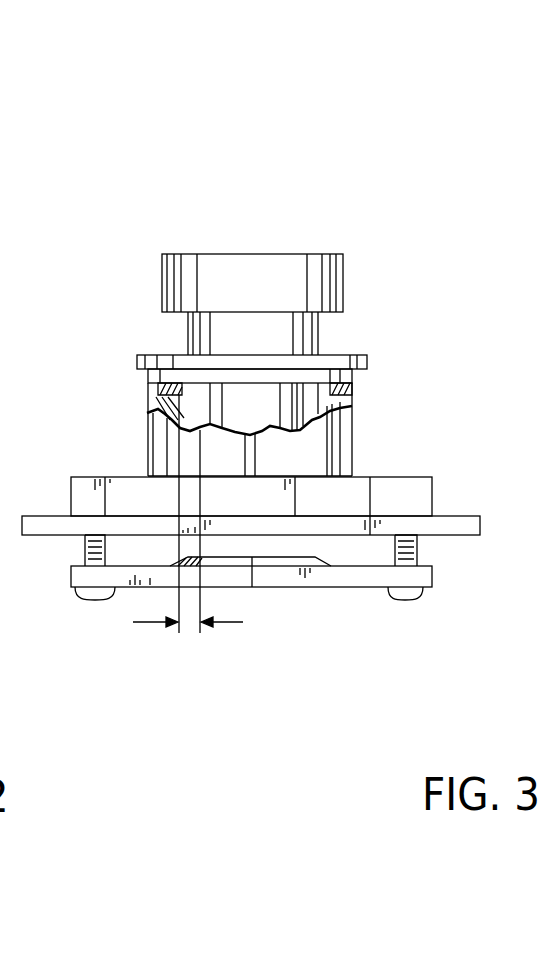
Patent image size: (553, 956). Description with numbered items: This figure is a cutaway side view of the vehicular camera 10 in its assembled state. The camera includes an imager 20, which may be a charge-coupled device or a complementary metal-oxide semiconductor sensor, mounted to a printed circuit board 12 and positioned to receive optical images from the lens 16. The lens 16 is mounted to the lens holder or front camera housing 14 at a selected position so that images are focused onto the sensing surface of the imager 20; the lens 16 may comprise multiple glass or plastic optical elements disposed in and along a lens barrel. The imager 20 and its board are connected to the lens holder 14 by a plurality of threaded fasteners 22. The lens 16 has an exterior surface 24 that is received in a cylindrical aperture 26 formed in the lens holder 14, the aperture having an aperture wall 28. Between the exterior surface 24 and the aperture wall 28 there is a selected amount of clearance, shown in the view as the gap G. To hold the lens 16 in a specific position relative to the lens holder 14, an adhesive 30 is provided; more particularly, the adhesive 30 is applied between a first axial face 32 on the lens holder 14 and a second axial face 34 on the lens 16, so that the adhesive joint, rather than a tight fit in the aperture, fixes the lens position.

The vehicular camera 10 is at (455, 126).
The printed circuit board 12 is at (432, 580).
The lens holder/front camera housing 14 is at (432, 480).
The lens 16 is at (345, 268).
The imager 20 is at (318, 556).
The threaded fasteners 22 is at (90, 599).
The exterior surface 24 is at (322, 396).
The cylindrical aperture 26 is at (192, 422).
The aperture wall 28 is at (346, 402).
The adhesive 30 is at (334, 388).
The first axial face 32 is at (332, 387).
The second axial face 34 is at (346, 388).
The gap G is at (200, 624).